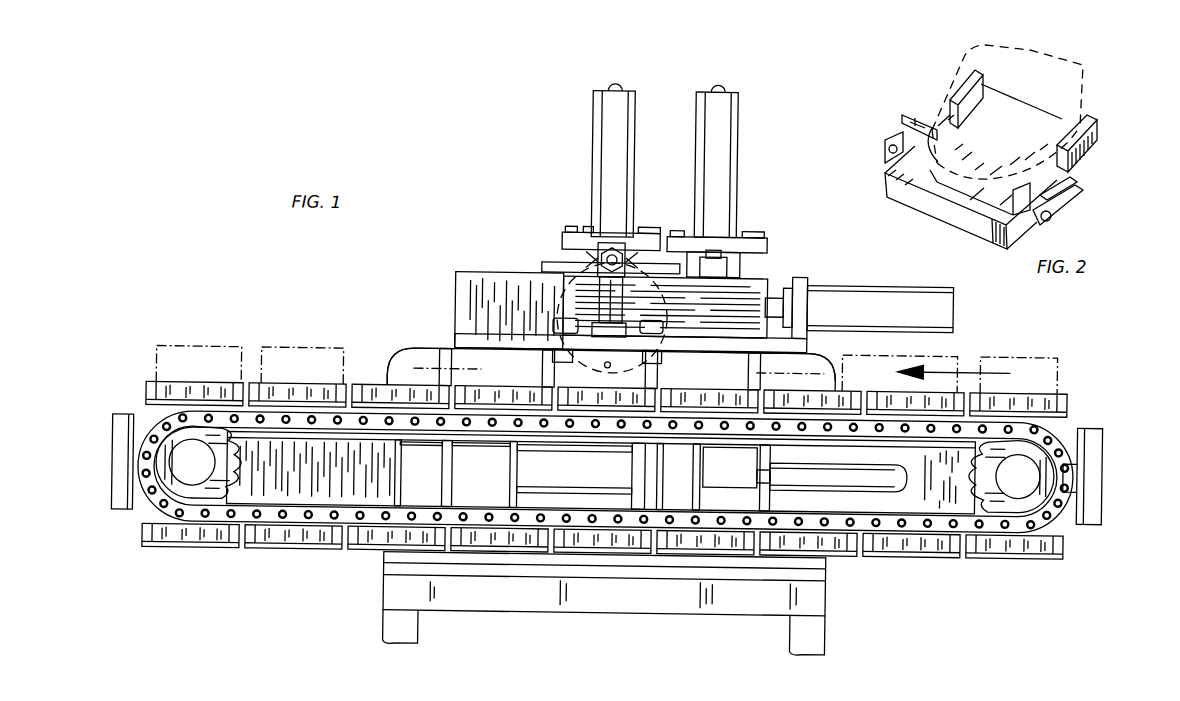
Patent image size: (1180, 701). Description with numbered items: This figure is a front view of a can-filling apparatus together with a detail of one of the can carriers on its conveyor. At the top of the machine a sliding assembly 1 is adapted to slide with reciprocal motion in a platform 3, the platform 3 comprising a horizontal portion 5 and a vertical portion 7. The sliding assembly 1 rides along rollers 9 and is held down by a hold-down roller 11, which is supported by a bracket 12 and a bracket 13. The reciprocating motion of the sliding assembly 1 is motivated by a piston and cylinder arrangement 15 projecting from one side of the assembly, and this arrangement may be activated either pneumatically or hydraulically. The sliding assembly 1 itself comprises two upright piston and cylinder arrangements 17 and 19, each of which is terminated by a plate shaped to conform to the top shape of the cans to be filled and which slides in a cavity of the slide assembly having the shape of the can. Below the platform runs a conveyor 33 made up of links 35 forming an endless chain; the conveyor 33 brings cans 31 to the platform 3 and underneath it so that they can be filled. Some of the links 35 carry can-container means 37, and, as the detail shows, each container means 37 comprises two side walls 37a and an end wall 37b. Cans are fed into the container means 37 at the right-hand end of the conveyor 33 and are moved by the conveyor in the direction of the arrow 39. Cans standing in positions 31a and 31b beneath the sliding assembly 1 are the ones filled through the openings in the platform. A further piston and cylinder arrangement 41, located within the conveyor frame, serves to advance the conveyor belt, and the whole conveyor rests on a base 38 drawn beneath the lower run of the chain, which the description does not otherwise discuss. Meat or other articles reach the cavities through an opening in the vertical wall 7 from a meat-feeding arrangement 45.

In FIG. 1, the sliding assembly 1 is at (753, 273).
In FIG. 1, the platform 3 is at (454, 270).
In FIG. 1, the horizontal portion 5 is at (458, 337).
In FIG. 1, the vertical portion 7 is at (491, 277).
In FIG. 1, the rollers 9 is at (554, 320).
In FIG. 1, the hold-down roller 11 is at (593, 256).
In FIG. 1, the bracket 12 is at (610, 277).
In FIG. 1, the bracket 13 is at (547, 264).
In FIG. 1, the piston and cylinder arrangement 15 is at (912, 288).
In FIG. 1, the piston and cylinder arrangement 17 is at (598, 127).
In FIG. 1, the piston and cylinder arrangement 19 is at (719, 147).
In FIG. 1, the cans 31 is at (250, 328).
In FIG. 2, the cans 31 is at (1083, 67).
In FIG. 1, the can position 31a is at (491, 344).
In FIG. 1, the can position 31b is at (736, 349).
In FIG. 1, the conveyor 33 is at (1044, 491).
In FIG. 1, the links 35 is at (153, 500).
In FIG. 2, the links 35 is at (902, 117).
In FIG. 1, the can-container means 37 is at (150, 390).
In FIG. 2, the side walls 37a is at (970, 83).
In FIG. 2, the end wall 37b is at (905, 167).
In FIG. 1, the base frame 38 is at (640, 509).
In FIG. 1, the arrow 39 is at (1008, 362).
In FIG. 1, the piston and cylinder arrangement 41 is at (887, 471).
In FIG. 1, the meat-feeding arrangement 45 is at (633, 352).